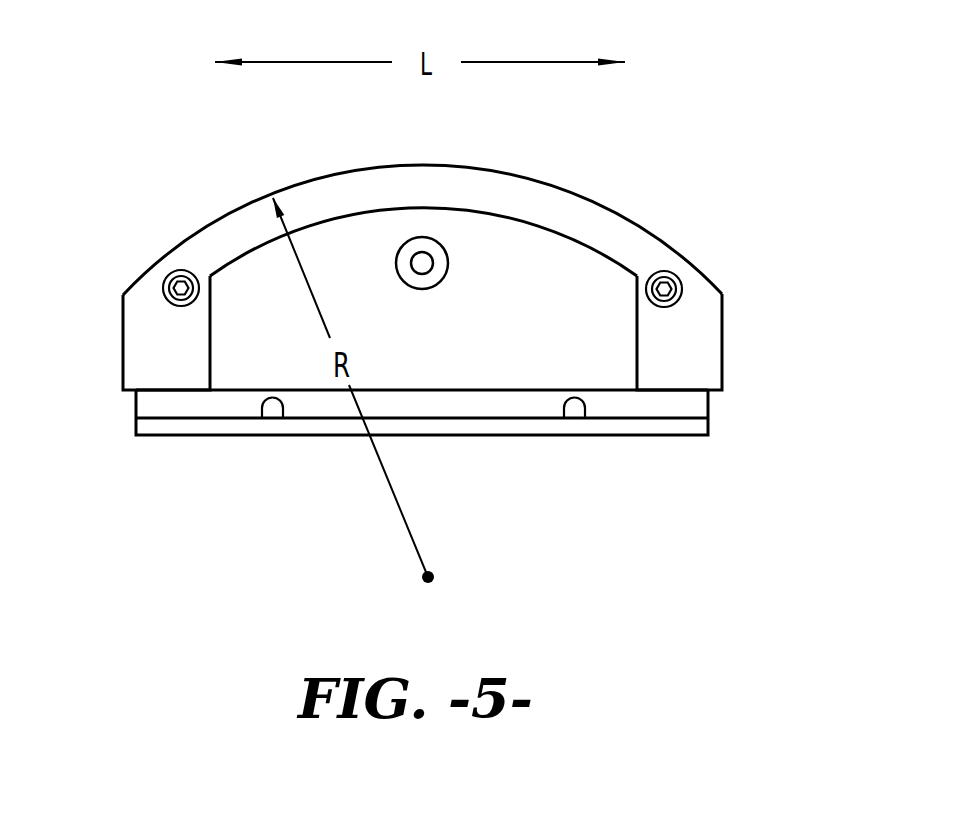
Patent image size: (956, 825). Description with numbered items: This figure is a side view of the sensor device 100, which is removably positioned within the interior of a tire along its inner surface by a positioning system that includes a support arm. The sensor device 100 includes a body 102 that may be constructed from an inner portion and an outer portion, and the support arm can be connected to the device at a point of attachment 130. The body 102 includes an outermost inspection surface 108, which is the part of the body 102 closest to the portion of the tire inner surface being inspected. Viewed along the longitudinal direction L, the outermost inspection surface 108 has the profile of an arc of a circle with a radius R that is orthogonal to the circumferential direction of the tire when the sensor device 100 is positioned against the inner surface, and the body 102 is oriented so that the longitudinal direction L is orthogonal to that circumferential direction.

The sensor device 100 is at (455, 177).
The body 102 is at (604, 385).
The outermost inspection surface 108 is at (155, 262).
The point of attachment 130 is at (438, 263).